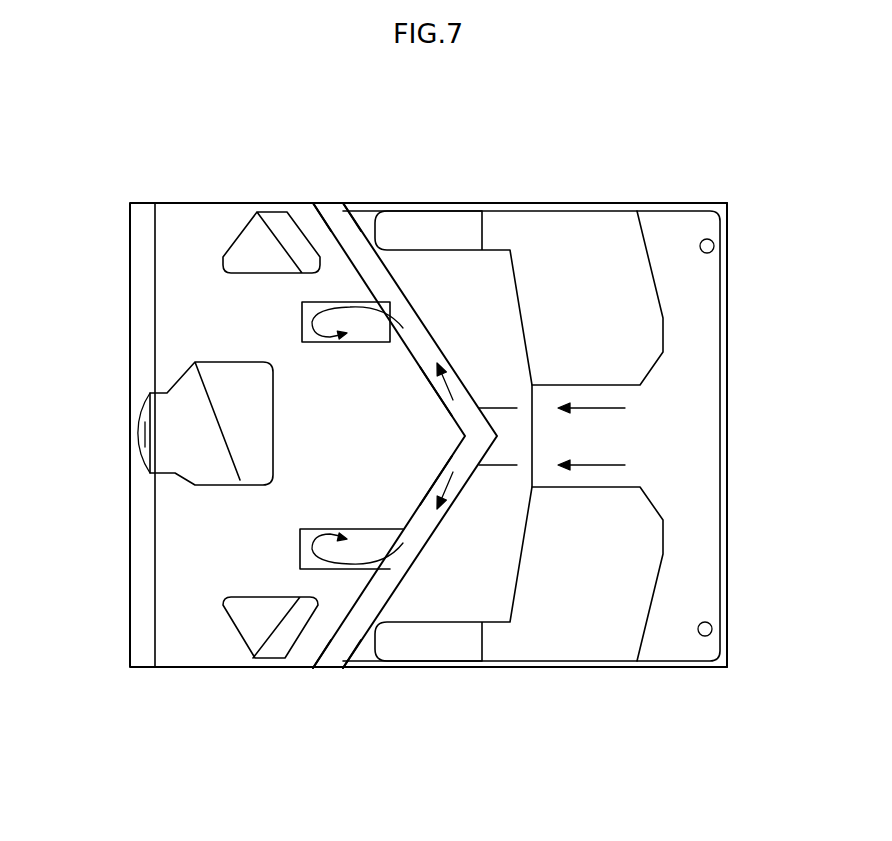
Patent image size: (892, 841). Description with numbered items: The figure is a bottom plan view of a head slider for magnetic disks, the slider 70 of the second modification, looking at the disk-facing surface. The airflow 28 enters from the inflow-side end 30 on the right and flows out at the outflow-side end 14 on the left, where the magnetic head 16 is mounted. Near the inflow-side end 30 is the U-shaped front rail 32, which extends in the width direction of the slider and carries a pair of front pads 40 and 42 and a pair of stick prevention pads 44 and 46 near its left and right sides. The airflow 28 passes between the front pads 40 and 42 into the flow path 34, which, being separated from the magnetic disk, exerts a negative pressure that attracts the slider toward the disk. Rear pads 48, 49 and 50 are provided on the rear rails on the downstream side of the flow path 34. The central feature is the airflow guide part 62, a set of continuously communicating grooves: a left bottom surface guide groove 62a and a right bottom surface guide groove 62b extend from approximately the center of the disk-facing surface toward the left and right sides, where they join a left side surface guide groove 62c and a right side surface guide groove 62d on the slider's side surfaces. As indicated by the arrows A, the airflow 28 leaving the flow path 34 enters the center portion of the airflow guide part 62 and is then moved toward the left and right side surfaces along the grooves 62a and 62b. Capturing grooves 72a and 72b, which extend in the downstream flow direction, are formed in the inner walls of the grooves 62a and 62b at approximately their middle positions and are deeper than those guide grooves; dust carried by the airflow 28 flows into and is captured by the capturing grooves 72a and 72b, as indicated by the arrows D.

The slider 70 is at (464, 133).
The outflow-side end 14 is at (131, 578).
The magnetic head 16 is at (142, 435).
The airflow 28 is at (603, 406).
The inflow-side end 30 is at (728, 480).
The front rail 32 is at (710, 342).
The flow path 34 is at (430, 278).
The front pad 40 is at (603, 648).
The front pad 42 is at (602, 226).
The stick prevention pad 44 is at (713, 630).
The stick prevention pad 46 is at (715, 248).
The rear pad 48 is at (235, 650).
The rear pad 49 is at (193, 372).
The rear pad 50 is at (222, 207).
The airflow guide part 62 is at (492, 368).
The left bottom surface guide groove 62a is at (440, 480).
The right bottom surface guide groove 62b is at (440, 395).
The left side surface guide groove 62c is at (323, 668).
The right side surface guide groove 62d is at (327, 203).
The capturing groove 72a is at (300, 548).
The capturing groove 72b is at (302, 322).
The arrows A is at (445, 460).
The arrows D is at (315, 343).